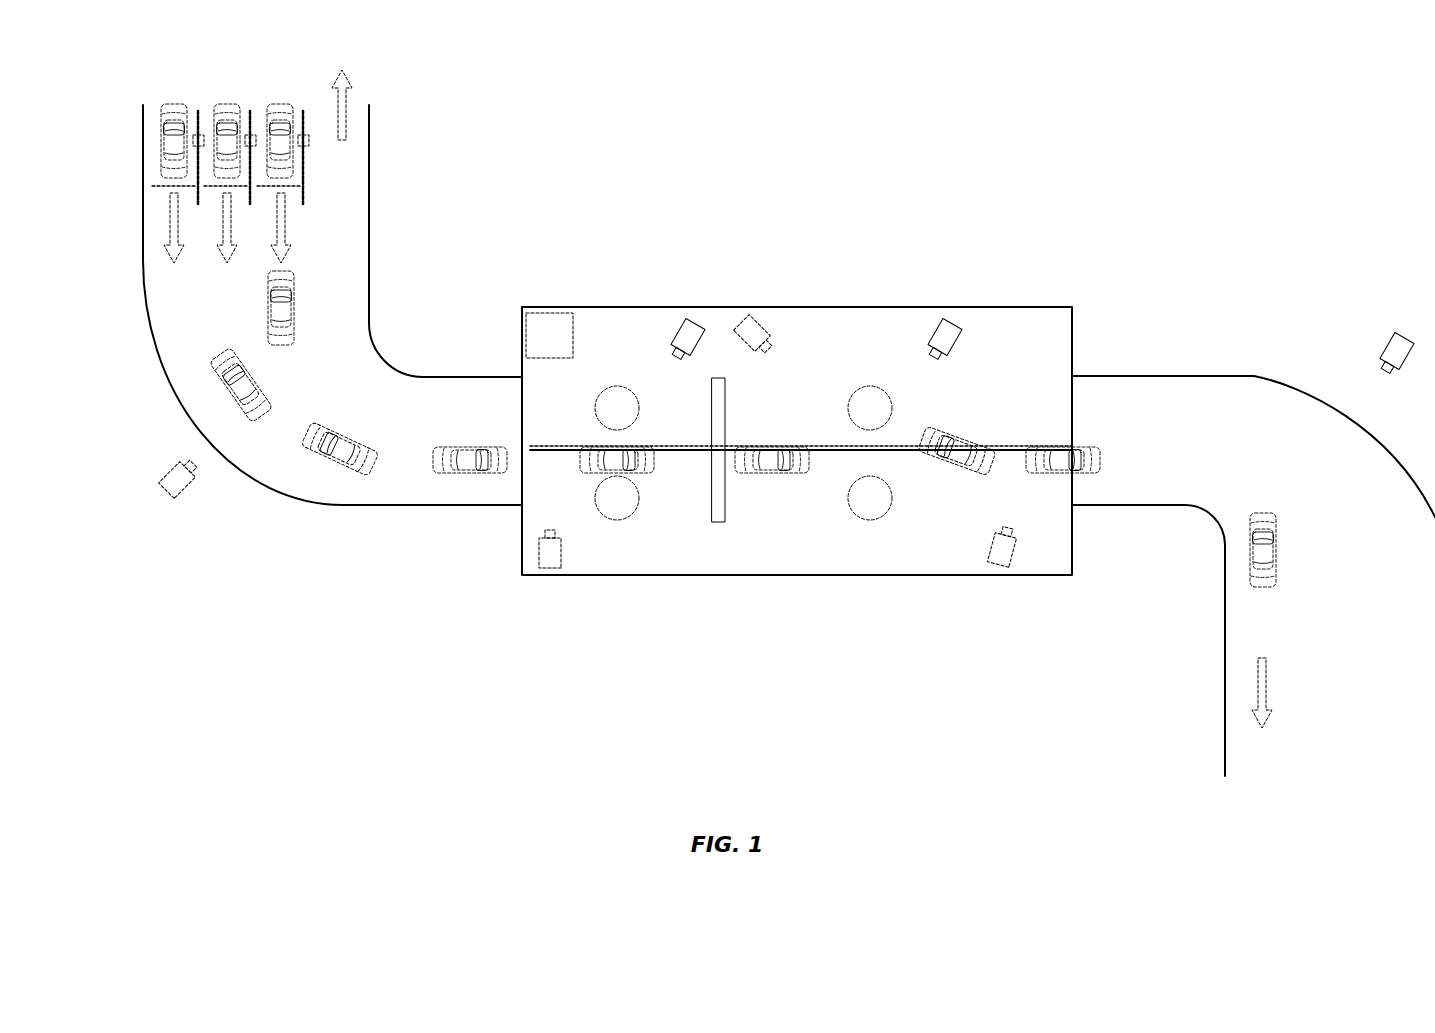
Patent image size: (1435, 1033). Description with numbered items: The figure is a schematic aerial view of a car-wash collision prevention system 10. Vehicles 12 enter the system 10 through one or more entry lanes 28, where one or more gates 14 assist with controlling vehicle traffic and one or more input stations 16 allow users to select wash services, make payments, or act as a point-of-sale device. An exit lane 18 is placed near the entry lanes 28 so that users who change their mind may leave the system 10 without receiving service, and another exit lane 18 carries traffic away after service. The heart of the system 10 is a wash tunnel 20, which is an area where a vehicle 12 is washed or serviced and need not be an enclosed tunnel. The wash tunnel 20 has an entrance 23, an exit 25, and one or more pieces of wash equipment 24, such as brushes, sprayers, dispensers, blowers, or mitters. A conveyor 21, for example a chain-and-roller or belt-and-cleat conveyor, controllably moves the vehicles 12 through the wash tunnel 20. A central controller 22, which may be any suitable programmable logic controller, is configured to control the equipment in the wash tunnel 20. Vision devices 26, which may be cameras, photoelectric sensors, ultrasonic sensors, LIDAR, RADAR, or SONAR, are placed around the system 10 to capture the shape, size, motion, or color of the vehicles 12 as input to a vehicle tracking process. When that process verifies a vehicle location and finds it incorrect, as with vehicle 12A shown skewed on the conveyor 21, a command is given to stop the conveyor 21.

The car-wash collision prevention system 10 is at (813, 143).
The vehicle 12 is at (282, 108).
The vehicle 12A is at (955, 448).
The gate 14 is at (294, 196).
The input station 16 is at (307, 140).
The exit lane 18 is at (718, 417).
The wash tunnel 20 is at (638, 305).
The conveyor 21 is at (565, 450).
The central controller 22 is at (549, 335).
The entrance 23 is at (510, 422).
The wash equipment 24 is at (617, 408).
The exit 25 is at (1086, 422).
The vision device 26 is at (752, 333).
The entry lane 28 is at (150, 214).